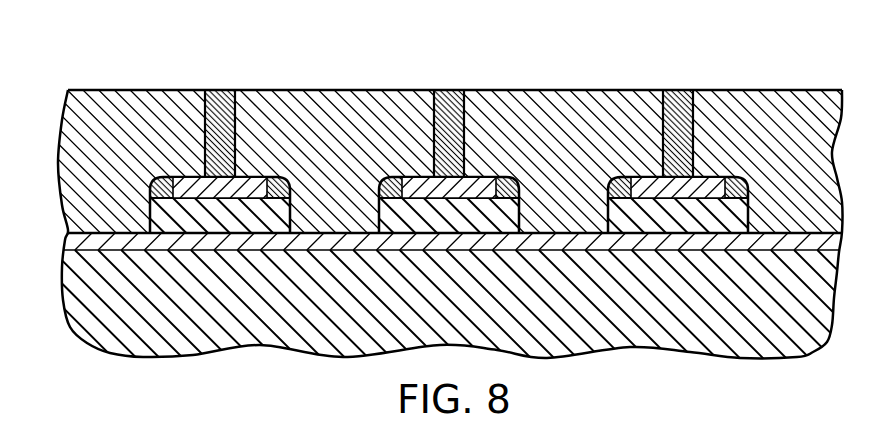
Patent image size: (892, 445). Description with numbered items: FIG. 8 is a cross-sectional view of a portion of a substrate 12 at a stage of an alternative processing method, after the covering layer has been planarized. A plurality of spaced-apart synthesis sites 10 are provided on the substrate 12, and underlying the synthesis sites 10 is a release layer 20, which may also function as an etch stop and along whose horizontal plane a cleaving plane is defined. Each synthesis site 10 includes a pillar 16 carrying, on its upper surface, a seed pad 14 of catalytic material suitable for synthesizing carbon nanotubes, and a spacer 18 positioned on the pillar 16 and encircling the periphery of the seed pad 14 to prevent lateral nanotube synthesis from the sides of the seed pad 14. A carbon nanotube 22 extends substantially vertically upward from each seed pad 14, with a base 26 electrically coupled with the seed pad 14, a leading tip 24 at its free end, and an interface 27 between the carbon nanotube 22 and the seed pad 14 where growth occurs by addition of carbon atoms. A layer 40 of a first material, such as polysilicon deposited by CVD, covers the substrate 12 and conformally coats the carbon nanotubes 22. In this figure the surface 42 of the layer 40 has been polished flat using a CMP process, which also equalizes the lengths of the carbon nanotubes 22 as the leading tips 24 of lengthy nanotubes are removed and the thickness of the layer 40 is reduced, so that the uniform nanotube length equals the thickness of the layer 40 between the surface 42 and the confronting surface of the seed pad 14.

The synthesis site 10 is at (142, 195).
The substrate 12 is at (145, 357).
The seed pad 14 is at (188, 176).
The pillar 16 is at (291, 218).
The spacer 18 is at (291, 188).
The release layer 20 is at (63, 242).
The carbon nanotube 22 is at (236, 94).
The leading tip 24 is at (220, 90).
The base 26 is at (238, 176).
The interface 27 is at (217, 176).
The layer 40 is at (58, 162).
The surface 42 is at (140, 90).